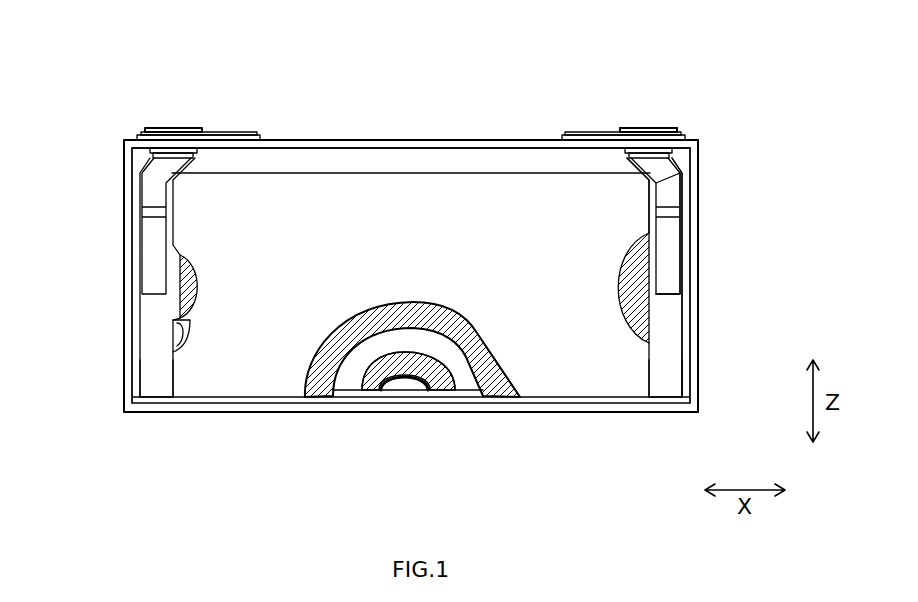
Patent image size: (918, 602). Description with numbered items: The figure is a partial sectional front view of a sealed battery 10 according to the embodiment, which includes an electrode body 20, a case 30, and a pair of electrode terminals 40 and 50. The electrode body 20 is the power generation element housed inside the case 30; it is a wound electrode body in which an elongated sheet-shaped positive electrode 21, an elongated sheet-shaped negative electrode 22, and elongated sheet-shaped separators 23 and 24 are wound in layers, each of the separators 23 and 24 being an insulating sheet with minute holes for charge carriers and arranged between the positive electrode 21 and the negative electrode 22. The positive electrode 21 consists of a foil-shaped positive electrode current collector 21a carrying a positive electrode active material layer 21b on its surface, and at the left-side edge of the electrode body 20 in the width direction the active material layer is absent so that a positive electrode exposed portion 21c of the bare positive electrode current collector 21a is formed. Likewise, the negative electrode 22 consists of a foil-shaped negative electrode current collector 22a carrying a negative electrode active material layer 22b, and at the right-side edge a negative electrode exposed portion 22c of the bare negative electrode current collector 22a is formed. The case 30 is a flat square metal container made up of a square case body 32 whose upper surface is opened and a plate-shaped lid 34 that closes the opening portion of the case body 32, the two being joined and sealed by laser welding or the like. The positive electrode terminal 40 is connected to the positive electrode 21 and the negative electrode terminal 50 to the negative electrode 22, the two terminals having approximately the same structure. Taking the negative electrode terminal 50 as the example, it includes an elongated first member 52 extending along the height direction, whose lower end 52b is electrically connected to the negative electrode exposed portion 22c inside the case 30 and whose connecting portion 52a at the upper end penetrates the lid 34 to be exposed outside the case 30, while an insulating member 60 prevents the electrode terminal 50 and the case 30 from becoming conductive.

The sealed battery 10 is at (99, 27).
The electrode body 20 is at (380, 169).
The positive electrode 21 is at (380, 390).
The positive electrode current collector 21a is at (138, 360).
The positive electrode active material layer 21b is at (197, 281).
The positive electrode exposed portion 21c is at (153, 388).
The negative electrode 22 is at (317, 397).
The negative electrode current collector 22a is at (690, 368).
The negative electrode active material layer 22b is at (627, 262).
The negative electrode exposed portion 22c is at (664, 388).
The separator 23 is at (353, 390).
The separator 24 is at (405, 386).
The case 30 is at (126, 137).
The case body 32 is at (122, 186).
The lid 34 is at (445, 140).
The positive electrode terminal 40 is at (191, 112).
The negative electrode terminal 50 is at (624, 114).
The first member 52 is at (672, 233).
The connecting portion 52a is at (650, 128).
The lower end 52b is at (672, 284).
The insulating member 60 is at (263, 138).